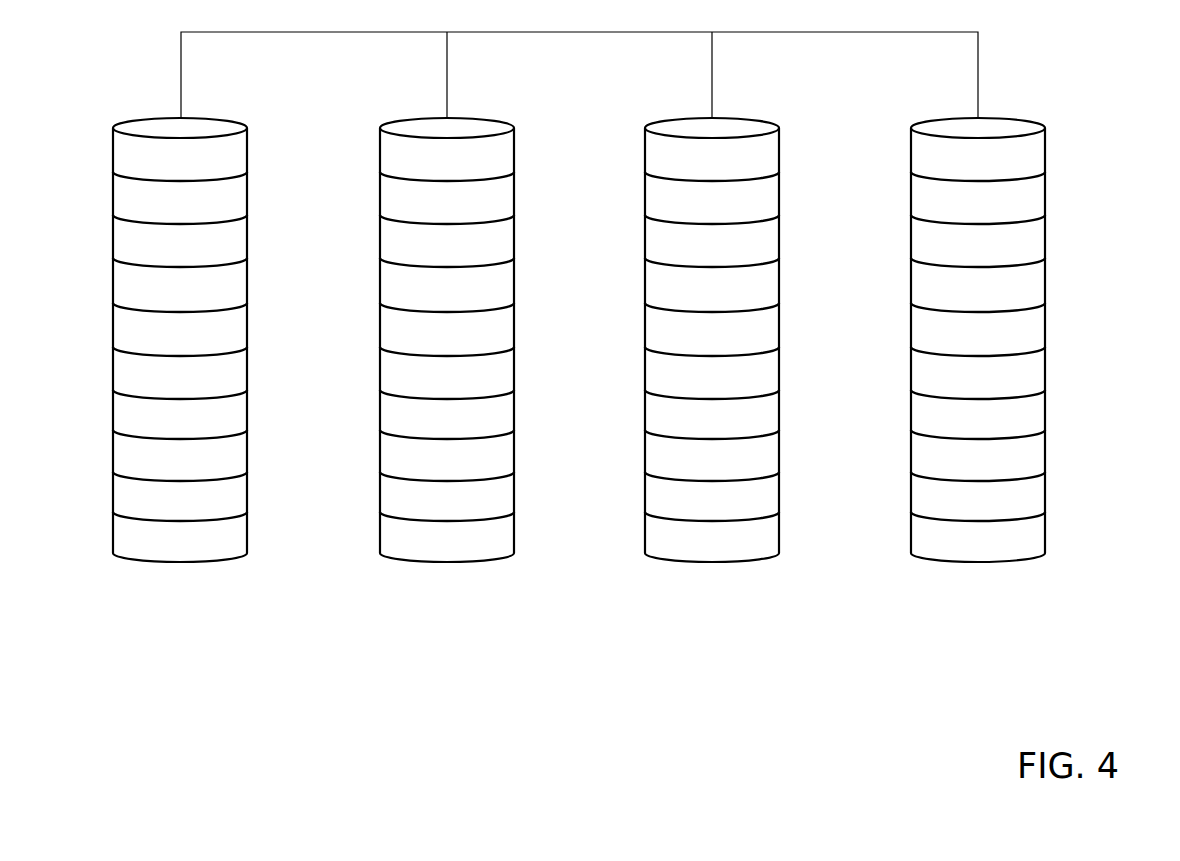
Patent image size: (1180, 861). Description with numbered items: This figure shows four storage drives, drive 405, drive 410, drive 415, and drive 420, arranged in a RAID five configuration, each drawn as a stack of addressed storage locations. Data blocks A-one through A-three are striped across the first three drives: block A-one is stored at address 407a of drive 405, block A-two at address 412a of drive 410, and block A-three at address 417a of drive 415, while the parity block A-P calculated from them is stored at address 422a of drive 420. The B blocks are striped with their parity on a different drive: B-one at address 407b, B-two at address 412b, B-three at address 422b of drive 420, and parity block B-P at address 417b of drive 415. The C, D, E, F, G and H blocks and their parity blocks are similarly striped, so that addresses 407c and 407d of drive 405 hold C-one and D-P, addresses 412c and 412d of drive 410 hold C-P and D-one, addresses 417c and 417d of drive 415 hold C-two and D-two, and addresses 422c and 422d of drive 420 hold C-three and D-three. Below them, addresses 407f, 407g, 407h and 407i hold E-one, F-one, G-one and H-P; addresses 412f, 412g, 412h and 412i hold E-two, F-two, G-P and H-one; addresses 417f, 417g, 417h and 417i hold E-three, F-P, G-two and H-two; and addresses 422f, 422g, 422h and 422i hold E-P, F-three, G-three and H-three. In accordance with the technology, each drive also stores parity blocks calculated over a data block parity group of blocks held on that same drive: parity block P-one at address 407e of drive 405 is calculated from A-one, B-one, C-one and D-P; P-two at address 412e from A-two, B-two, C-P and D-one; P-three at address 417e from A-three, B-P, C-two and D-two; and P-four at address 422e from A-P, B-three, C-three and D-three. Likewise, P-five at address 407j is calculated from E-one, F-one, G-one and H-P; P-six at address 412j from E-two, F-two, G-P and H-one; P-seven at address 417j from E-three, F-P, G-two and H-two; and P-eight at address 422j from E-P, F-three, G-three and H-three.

The drive 405 is at (128, 104).
The drive 410 is at (388, 106).
The drive 415 is at (669, 106).
The drive 420 is at (943, 104).
The address 407a is at (258, 156).
The address 407b is at (258, 198).
The address 407c is at (258, 241).
The address 407d is at (258, 285).
The address 407e is at (258, 330).
The address 407f is at (258, 373).
The address 407g is at (258, 415).
The address 407h is at (258, 457).
The address 407i is at (258, 499).
The address 407j is at (258, 541).
The address 412a is at (491, 159).
The address 412b is at (491, 202).
The address 412c is at (490, 245).
The address 412d is at (491, 290).
The address 412e is at (491, 334).
The address 412f is at (489, 377).
The address 412g is at (491, 417).
The address 412h is at (491, 459).
The address 412i is at (488, 499).
The address 412j is at (488, 540).
The address 417a is at (756, 159).
The address 417b is at (756, 202).
The address 417c is at (755, 245).
The address 417d is at (756, 290).
The address 417e is at (756, 334).
The address 417f is at (754, 377).
The address 417g is at (756, 417).
The address 417h is at (756, 459).
The address 417i is at (753, 499).
The address 417j is at (753, 540).
The address 422a is at (1022, 159).
The address 422b is at (1022, 202).
The address 422c is at (1021, 245).
The address 422d is at (1022, 290).
The address 422e is at (1022, 334).
The address 422f is at (1020, 377).
The address 422g is at (1022, 417).
The address 422h is at (1022, 459).
The address 422i is at (1019, 499).
The address 422j is at (1019, 540).